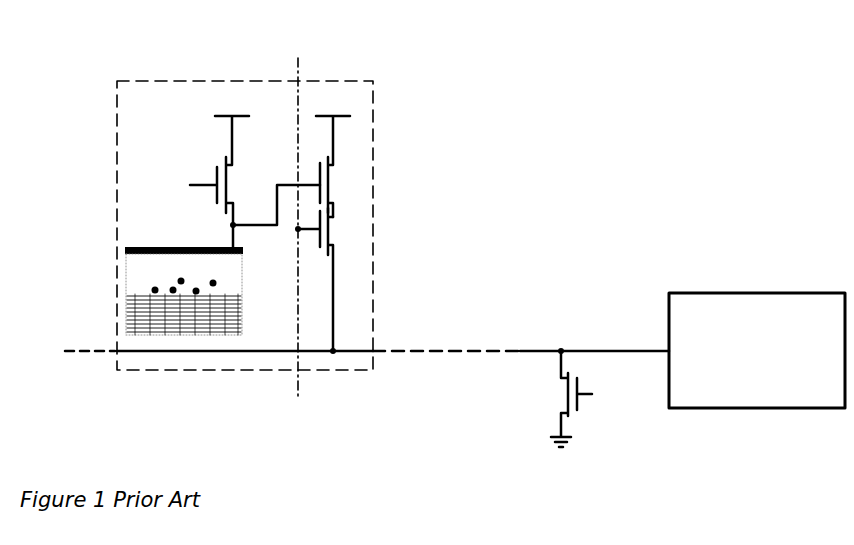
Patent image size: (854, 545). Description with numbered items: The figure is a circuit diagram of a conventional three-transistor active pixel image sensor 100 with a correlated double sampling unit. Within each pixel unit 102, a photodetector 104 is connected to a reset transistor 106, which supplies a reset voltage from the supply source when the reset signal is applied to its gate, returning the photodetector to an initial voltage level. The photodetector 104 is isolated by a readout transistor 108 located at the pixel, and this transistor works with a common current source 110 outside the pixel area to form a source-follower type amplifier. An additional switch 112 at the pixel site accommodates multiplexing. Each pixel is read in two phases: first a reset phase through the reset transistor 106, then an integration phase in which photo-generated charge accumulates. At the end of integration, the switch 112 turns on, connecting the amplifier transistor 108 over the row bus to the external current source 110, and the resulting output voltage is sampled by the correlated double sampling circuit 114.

The image sensor 100 is at (716, 53).
The pixel unit 102 is at (234, 80).
The photodetector 104 is at (118, 259).
The reset transistor Q1 106 is at (160, 226).
The readout transistor Q2 108 is at (337, 170).
The common current source Qrow 110 is at (585, 408).
The switch Q3 112 is at (338, 242).
The correlated double sampling (CDS) circuit 114 is at (796, 293).